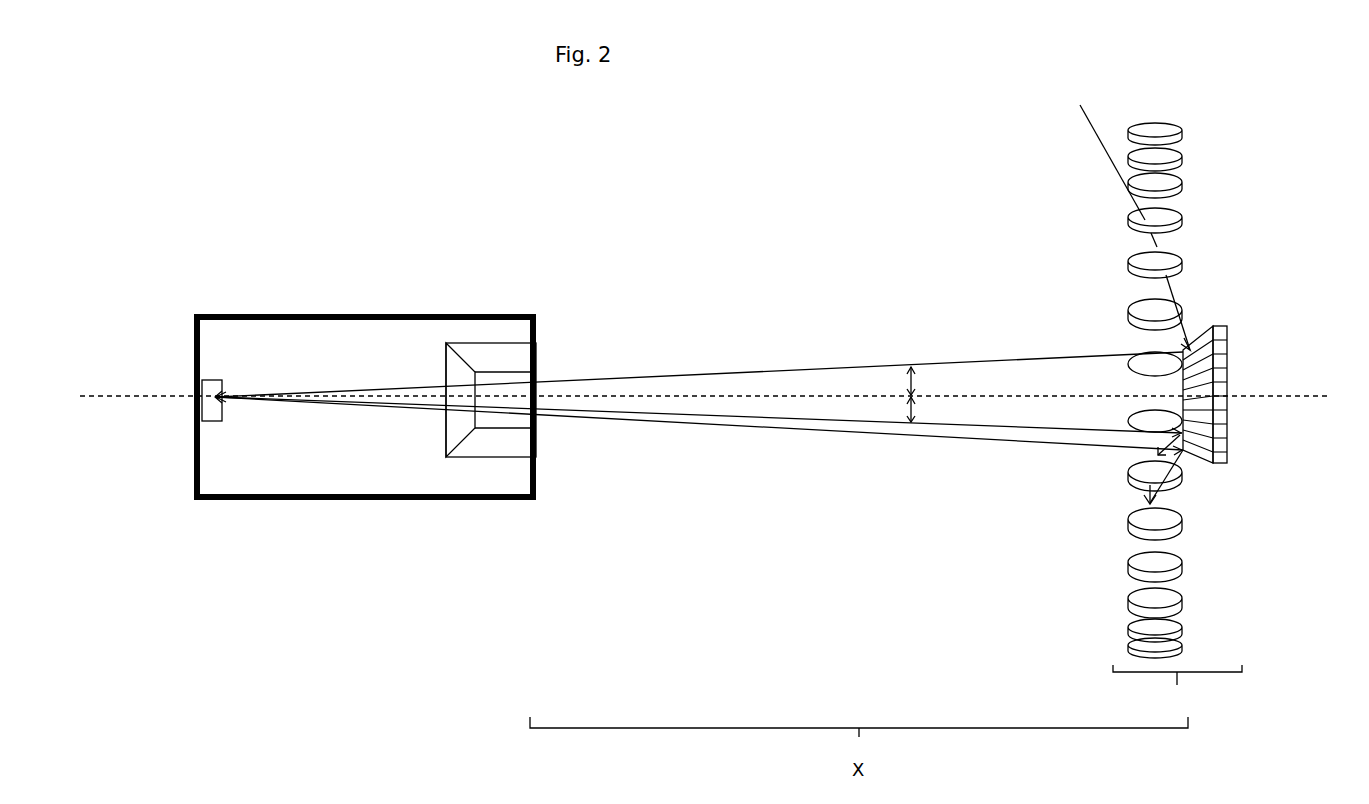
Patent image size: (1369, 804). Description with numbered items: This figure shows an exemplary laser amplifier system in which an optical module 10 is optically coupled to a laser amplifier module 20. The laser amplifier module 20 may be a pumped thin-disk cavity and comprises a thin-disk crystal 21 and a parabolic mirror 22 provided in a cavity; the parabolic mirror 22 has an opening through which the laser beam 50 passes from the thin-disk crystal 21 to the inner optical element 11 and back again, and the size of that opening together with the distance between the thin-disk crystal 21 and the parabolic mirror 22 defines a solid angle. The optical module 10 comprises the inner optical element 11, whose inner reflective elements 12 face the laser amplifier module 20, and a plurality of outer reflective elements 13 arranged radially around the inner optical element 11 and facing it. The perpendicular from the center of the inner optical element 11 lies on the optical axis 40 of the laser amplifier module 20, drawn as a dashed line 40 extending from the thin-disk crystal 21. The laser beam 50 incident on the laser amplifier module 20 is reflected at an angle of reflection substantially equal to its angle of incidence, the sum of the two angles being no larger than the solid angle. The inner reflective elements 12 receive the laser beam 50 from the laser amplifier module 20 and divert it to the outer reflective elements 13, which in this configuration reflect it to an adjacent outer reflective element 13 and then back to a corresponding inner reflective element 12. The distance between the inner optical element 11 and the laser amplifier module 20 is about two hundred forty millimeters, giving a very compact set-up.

The optical module 10 is at (1208, 420).
The inner optical element 11 is at (1263, 454).
The inner reflective elements 12 is at (1195, 387).
The outer reflective elements 13 is at (1188, 247).
The laser amplifier module 20 is at (415, 272).
The thin-disk crystal 21 is at (213, 422).
The parabolic mirror 22 is at (428, 437).
The optical axis/perpendicular 40 is at (702, 383).
The laser beam 50 is at (830, 358).